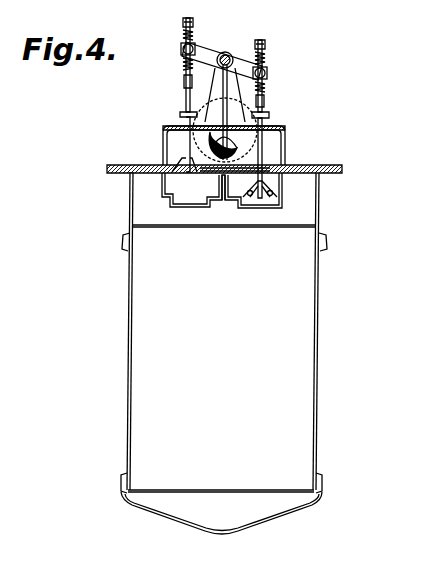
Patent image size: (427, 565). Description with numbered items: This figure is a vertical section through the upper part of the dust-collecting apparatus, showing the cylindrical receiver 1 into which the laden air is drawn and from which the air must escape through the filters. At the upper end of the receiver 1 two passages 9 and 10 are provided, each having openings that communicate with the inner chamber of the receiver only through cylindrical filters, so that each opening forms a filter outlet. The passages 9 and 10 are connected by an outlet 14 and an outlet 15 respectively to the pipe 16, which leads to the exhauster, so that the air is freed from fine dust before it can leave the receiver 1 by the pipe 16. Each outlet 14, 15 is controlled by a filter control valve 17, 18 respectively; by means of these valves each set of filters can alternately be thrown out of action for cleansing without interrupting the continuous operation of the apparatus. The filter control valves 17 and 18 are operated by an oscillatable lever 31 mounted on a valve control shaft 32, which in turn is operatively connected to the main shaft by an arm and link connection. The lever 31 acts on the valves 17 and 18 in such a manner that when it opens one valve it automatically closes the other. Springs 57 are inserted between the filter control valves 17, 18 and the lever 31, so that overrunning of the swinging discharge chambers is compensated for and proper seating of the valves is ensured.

The cylindrical receiver 1 is at (143, 307).
The passage 9 is at (158, 167).
The passage 10 is at (295, 164).
The outlet 14 is at (270, 162).
The outlet 15 is at (163, 155).
The pipe 16 is at (267, 112).
The filter control valve 17 is at (182, 152).
The filter control valve 18 is at (270, 185).
The oscillatable lever 31 is at (210, 53).
The valve control shaft 32 is at (229, 54).
The springs 57 is at (180, 62).